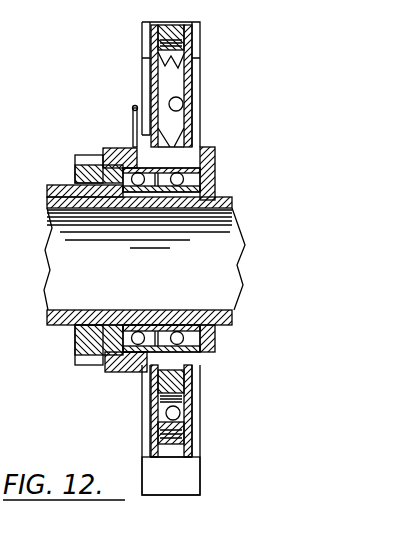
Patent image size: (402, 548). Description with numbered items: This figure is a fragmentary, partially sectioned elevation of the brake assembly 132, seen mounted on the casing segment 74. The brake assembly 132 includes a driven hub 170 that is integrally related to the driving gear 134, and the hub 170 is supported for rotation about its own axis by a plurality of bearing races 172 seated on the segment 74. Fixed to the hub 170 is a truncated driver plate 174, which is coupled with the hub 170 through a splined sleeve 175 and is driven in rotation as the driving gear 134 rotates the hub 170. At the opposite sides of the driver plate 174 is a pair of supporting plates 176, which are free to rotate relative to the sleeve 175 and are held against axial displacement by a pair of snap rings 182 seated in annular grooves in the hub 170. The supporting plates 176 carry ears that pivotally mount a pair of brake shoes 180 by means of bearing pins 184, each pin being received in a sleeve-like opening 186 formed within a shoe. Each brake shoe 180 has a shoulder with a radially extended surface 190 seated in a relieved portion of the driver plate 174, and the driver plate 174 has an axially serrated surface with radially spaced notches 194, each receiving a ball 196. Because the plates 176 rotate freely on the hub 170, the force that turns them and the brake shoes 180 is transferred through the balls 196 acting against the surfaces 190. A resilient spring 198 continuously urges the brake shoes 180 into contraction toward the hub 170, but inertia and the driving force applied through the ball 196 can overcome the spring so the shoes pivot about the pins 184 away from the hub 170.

The brake assembly 132 is at (233, 60).
The sleeve-like opening 186 is at (193, 44).
The supporting plates 176 is at (150, 79).
The bearing pins 184 is at (170, 38).
The radially extended surface 190 is at (170, 84).
The ball 196 is at (183, 106).
The resilient spring 198 is at (133, 105).
The splined sleeve 175 is at (115, 147).
The driver plate 174 is at (215, 152).
The segment 74 is at (201, 208).
The bearing races 172 is at (184, 330).
The driven hub 170 is at (75, 342).
The driving gear 134 is at (90, 365).
The snap rings 182 is at (152, 380).
The notches 194 is at (178, 400).
The brake shoes 180 is at (187, 483).